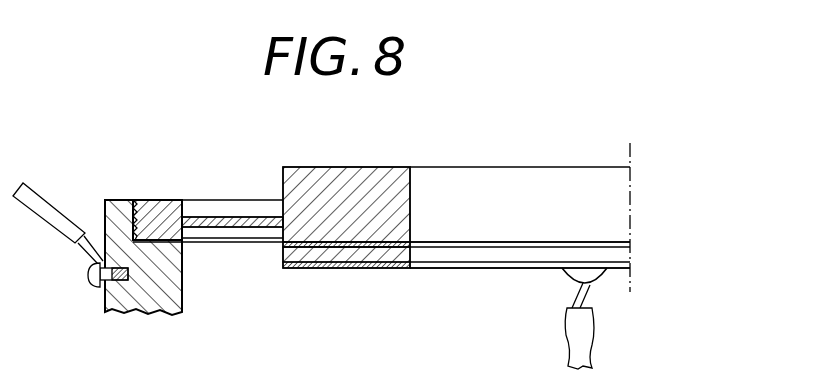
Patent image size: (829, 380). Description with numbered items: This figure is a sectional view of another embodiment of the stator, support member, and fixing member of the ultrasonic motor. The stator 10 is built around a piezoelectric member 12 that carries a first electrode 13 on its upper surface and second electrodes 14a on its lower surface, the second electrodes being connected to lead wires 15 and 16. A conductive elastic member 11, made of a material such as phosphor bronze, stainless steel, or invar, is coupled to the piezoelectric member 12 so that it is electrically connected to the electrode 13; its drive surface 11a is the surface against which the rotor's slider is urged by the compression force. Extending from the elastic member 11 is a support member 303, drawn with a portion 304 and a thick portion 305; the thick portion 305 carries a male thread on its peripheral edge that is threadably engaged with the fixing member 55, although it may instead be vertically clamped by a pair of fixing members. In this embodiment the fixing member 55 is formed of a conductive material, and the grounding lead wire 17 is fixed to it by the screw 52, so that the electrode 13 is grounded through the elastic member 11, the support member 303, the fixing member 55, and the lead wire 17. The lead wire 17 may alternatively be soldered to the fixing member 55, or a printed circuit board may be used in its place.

The stator 10 is at (593, 168).
The conductive elastic member 11 is at (622, 203).
The drive surface 11a is at (358, 183).
The piezoelectric member 12 is at (622, 255).
The first electrode 13 is at (480, 242).
The second electrode 14a is at (433, 266).
The lead wire 15 is at (583, 346).
The lead wire 16 is at (584, 288).
The grounding lead wire 17 is at (58, 217).
The screw 52 is at (90, 278).
The fixing member 55 is at (123, 300).
The support member 303 is at (264, 283).
The insulating sleeve 304 is at (231, 228).
The thick portion 305 is at (183, 313).